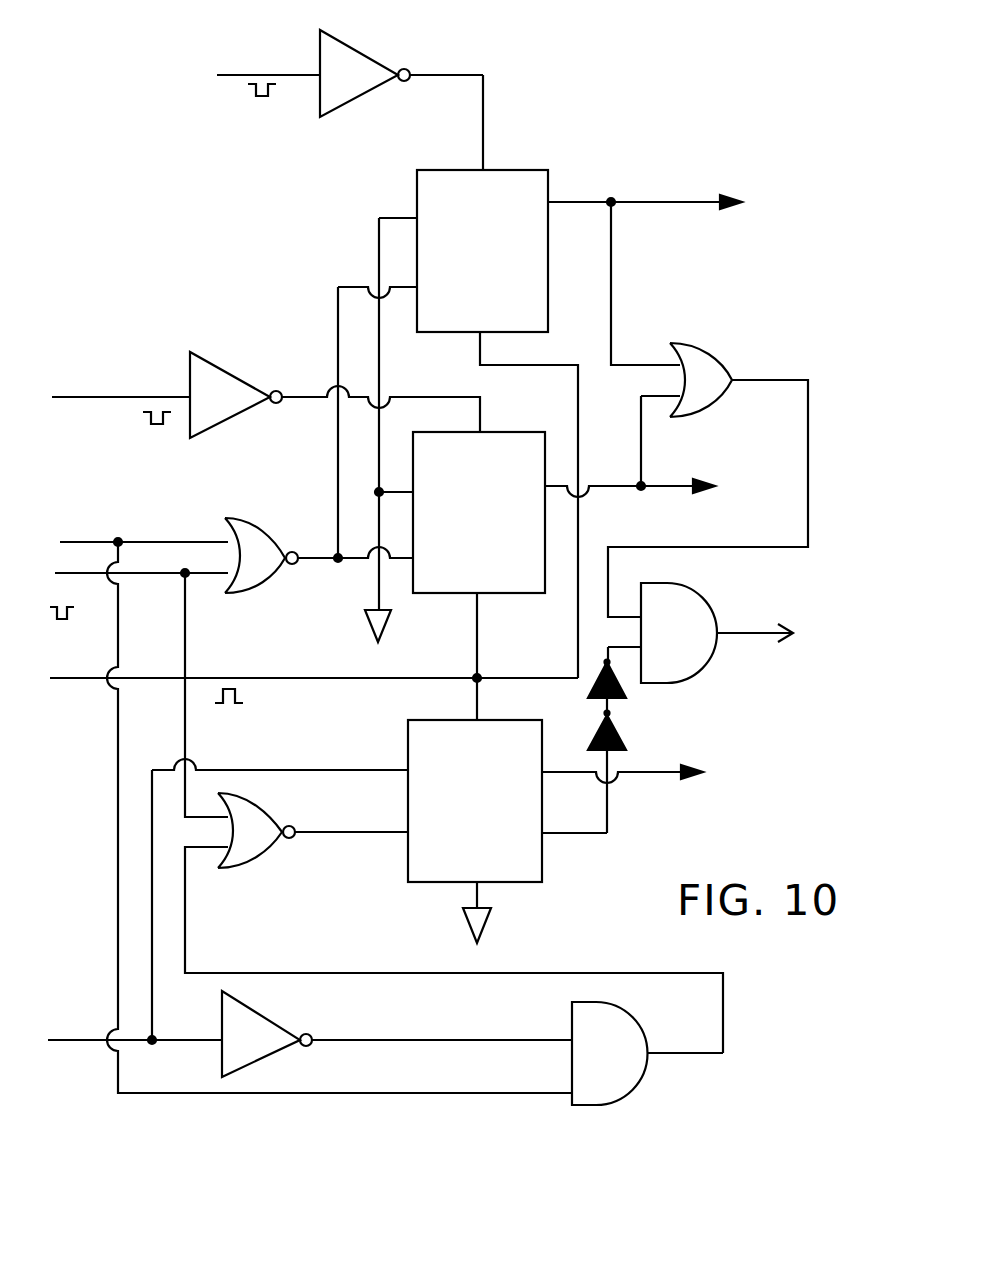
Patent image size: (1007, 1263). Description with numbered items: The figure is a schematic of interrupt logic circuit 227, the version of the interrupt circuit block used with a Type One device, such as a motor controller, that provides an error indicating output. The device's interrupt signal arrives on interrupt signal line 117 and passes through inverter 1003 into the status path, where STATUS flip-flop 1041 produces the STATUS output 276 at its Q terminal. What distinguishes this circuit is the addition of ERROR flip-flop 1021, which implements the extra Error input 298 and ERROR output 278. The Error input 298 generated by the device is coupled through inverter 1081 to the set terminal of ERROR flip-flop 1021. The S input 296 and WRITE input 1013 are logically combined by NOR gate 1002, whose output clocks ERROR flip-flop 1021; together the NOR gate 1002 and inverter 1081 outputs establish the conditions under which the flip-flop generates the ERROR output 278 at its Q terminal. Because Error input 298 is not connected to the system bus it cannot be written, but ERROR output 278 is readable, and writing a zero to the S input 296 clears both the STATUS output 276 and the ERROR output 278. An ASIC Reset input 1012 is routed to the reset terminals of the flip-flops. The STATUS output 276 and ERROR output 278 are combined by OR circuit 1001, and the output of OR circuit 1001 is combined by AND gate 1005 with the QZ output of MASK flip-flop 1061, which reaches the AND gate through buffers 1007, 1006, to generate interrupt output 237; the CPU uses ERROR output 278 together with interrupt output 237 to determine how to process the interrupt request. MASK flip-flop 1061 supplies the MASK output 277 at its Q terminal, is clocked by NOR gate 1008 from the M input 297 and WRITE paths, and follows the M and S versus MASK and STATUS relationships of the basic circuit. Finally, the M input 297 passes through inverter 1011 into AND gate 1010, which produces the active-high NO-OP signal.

The interrupt logic circuit 227 is at (761, 63).
The Error input 298 is at (226, 71).
The inverter 1081 is at (357, 43).
The ERROR flip-flop 1021 is at (500, 170).
The ERROR output 278 is at (699, 269).
The interrupt signal line 117 is at (118, 398).
The inverter 1003 is at (225, 360).
The OR circuit 1001 is at (690, 355).
The STATUS flip-flop 1041 is at (498, 430).
The STATUS output 276 is at (669, 463).
The S input 296 is at (205, 521).
The WRITE input 1013 is at (125, 681).
The NOR gate 1002 is at (250, 520).
The AND gate 1005 is at (680, 588).
The interrupt output 237 is at (765, 620).
The ASIC Reset input 1012 is at (384, 677).
The buffer 1007 is at (622, 690).
The buffer 1006 is at (620, 738).
The MASK flip-flop 1061 is at (517, 882).
The MASK output 277 is at (672, 784).
The NOR gate 1008 is at (260, 812).
The M input 297 is at (135, 1031).
The inverter 1011 is at (268, 1015).
The AND gate 1010 is at (602, 1008).